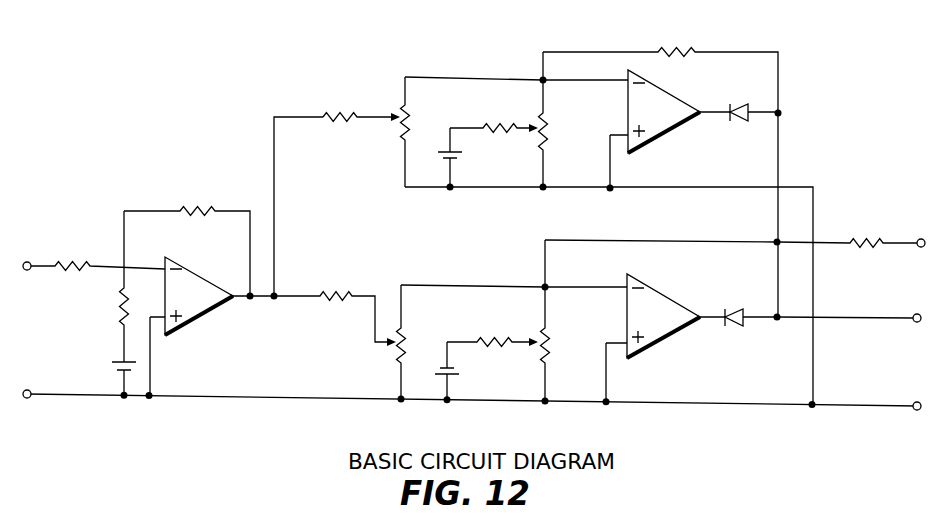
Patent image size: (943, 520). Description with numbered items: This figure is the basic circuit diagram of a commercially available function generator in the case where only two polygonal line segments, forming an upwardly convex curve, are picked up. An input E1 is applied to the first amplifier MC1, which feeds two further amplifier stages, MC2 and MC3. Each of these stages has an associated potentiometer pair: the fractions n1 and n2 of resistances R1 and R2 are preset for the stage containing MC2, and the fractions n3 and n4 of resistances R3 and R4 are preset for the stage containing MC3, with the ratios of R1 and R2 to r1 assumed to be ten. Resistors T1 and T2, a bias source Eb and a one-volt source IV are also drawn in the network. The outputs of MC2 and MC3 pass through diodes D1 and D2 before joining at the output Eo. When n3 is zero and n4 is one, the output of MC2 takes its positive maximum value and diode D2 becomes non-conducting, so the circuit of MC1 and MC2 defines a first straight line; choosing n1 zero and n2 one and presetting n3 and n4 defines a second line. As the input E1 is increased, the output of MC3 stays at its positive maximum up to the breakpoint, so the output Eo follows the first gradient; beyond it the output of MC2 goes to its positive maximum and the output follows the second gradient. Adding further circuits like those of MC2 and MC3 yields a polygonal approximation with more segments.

The input E1 is at (93, 283).
The one volt reference battery IV is at (110, 371).
The amplifier MC1 is at (191, 326).
The amplifier MC2 is at (655, 129).
The amplifier MC3 is at (653, 338).
The resistor of value T1 is at (406, 213).
The feedback resistor of value T2 is at (731, 167).
The resistance R1 is at (394, 122).
The resistance R2 is at (551, 124).
The resistance R3 is at (394, 345).
The resistance R4 is at (554, 347).
The bias battery Eb is at (432, 279).
The diode D1 is at (739, 127).
The diode D2 is at (738, 331).
The output Eo is at (852, 305).